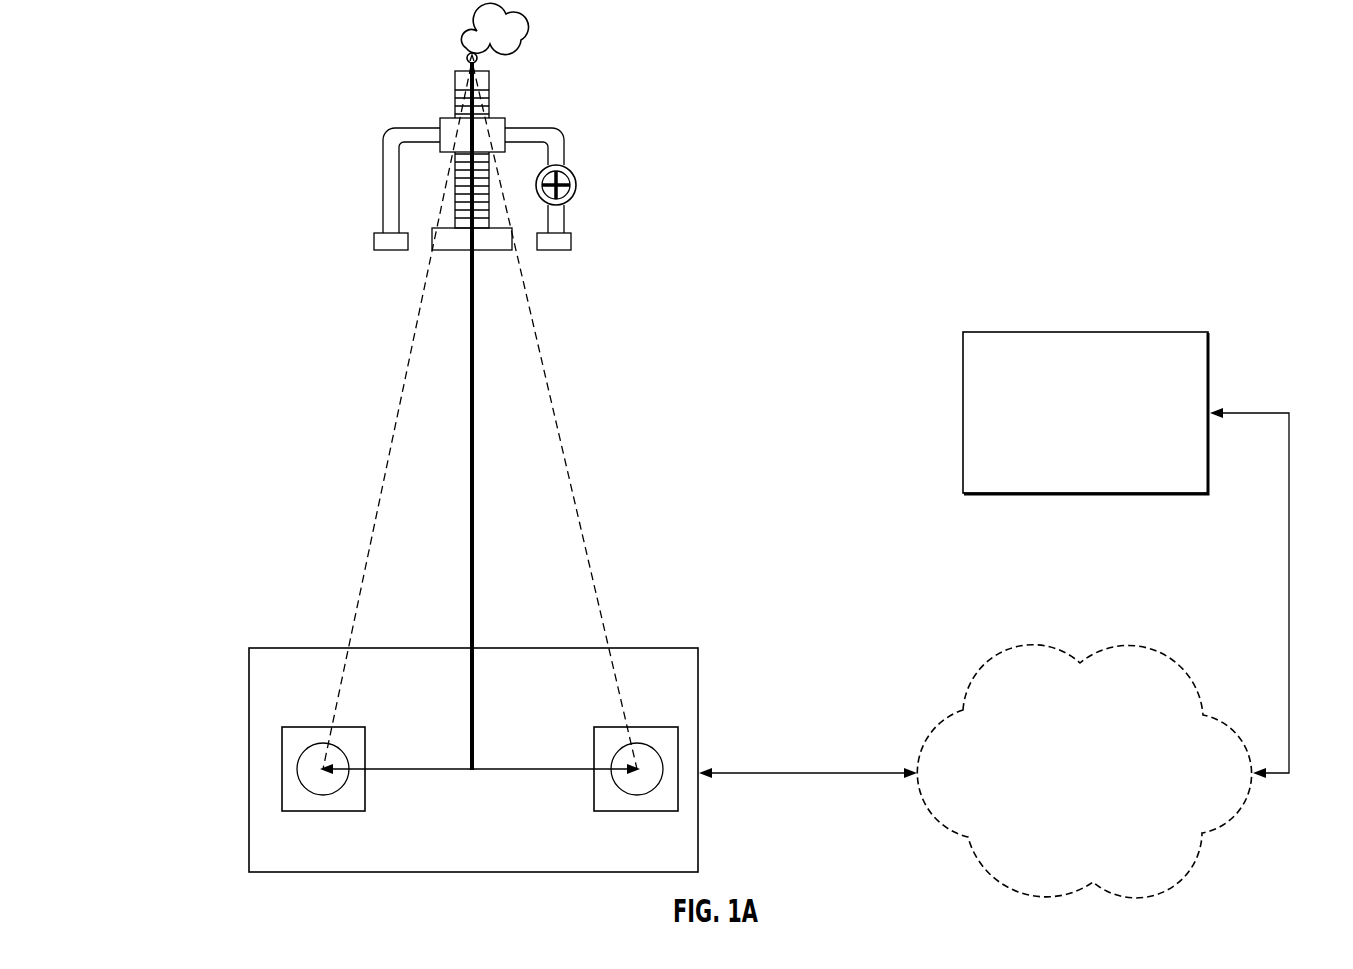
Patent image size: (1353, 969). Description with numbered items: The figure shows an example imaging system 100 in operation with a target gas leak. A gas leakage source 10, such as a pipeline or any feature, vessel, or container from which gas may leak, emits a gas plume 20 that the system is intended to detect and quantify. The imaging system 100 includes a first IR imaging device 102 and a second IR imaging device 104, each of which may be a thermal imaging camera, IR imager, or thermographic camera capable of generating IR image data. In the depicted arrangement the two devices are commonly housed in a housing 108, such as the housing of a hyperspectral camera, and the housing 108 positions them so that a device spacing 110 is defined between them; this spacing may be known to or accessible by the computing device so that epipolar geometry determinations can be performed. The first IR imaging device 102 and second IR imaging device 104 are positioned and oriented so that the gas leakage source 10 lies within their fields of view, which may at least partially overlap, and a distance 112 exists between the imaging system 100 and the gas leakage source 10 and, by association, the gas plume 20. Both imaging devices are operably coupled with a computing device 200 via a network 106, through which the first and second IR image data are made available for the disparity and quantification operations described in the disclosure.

The imaging system 100 is at (196, 604).
The gas plume 20 is at (524, 37).
The gas leakage source 10 is at (478, 58).
The distance 112 is at (449, 533).
The housing 108 is at (518, 648).
The first IR imaging device 102 is at (350, 727).
The second IR imaging device 104 is at (641, 727).
The device spacing 110 is at (532, 772).
The computing device 200 is at (1153, 332).
The network 106 is at (1137, 648).